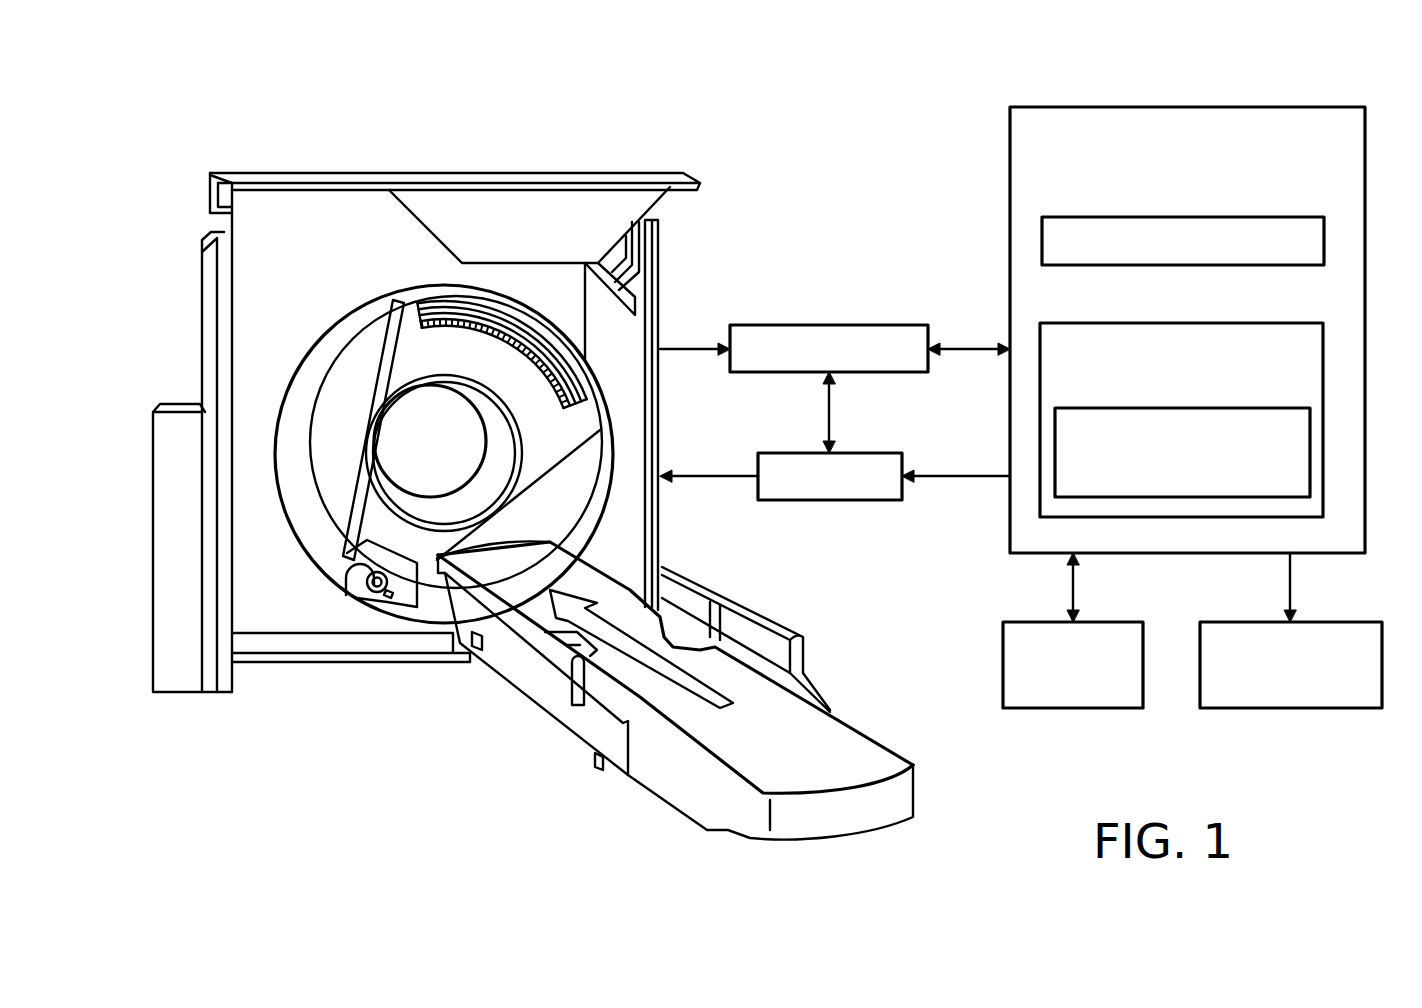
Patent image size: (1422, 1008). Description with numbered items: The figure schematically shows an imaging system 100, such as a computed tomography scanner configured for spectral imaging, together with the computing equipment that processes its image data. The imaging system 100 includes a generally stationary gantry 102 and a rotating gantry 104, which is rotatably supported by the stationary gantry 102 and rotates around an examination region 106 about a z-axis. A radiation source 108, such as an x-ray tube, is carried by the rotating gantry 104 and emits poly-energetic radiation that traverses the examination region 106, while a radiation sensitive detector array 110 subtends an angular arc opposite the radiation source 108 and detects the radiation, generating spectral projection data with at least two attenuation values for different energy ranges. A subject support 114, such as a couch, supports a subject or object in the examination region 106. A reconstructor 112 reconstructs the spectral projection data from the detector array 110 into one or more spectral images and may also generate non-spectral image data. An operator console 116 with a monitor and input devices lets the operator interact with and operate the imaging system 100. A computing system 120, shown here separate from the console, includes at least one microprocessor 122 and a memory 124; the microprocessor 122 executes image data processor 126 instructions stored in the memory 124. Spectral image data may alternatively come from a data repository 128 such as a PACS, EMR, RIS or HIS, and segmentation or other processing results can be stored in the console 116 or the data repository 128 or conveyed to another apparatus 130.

The imaging system 100 is at (146, 177).
The stationary gantry 102 is at (207, 344).
The rotating gantry 104 is at (410, 360).
The examination region 106 is at (452, 456).
The radiation source 108 is at (372, 590).
The radiation sensitive detector array 110 is at (510, 342).
The reconstructor 112 is at (868, 325).
The subject support 114 is at (858, 757).
The operator console 116 is at (870, 453).
The computing system 120 is at (1290, 107).
The microprocessor 122 is at (1253, 217).
The memory 124 is at (1240, 323).
The image data processor 126 is at (1222, 408).
The data repository 128 is at (1110, 622).
The other apparatus 130 is at (1333, 622).